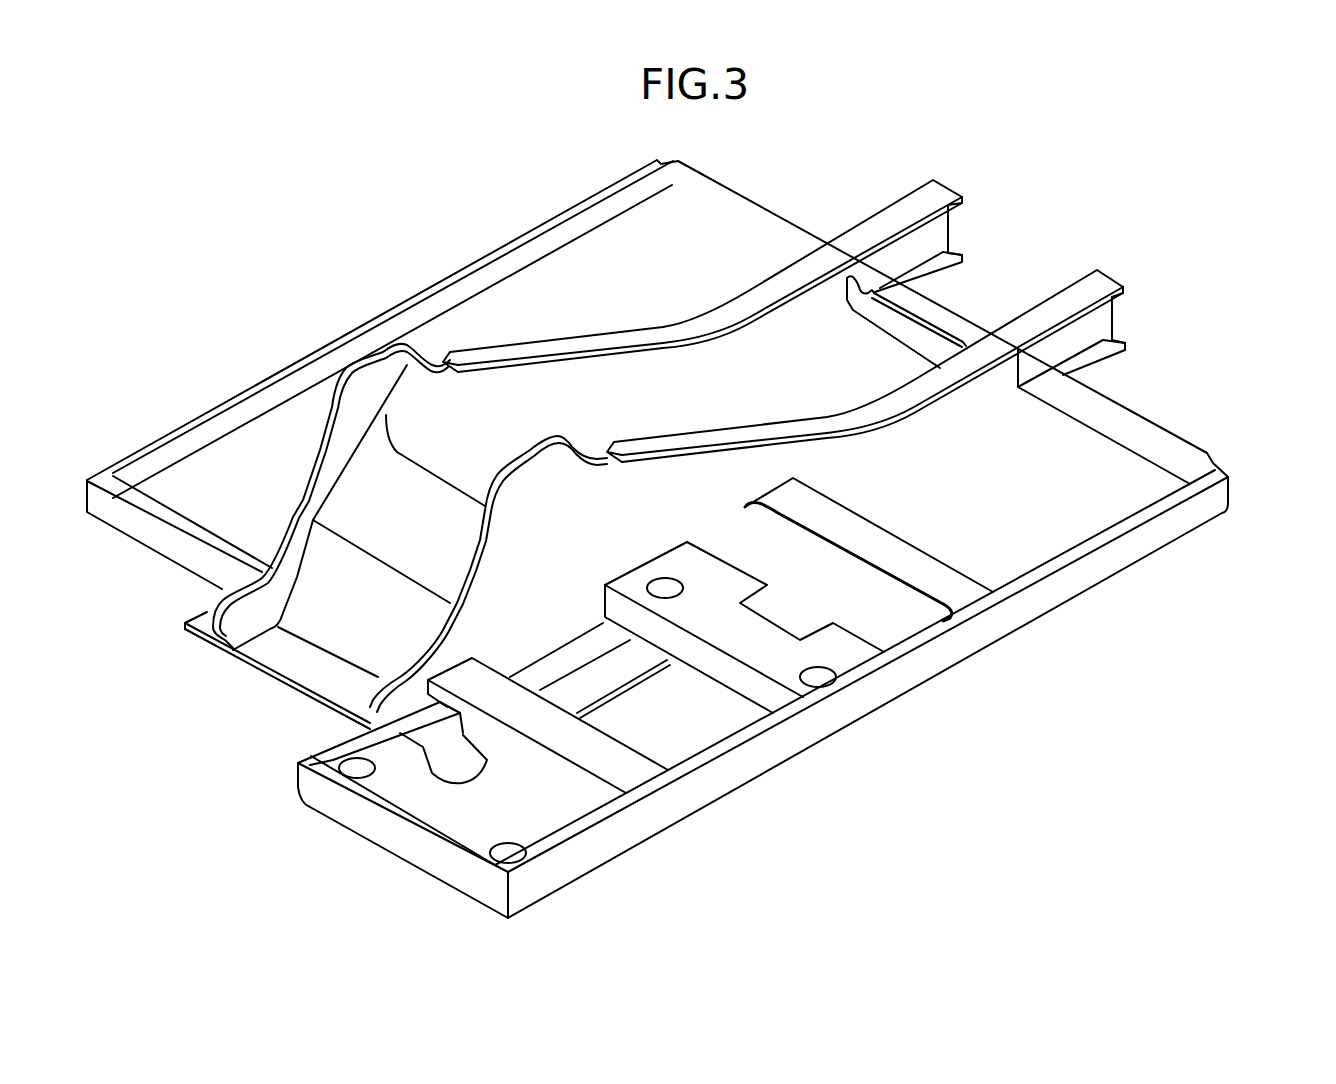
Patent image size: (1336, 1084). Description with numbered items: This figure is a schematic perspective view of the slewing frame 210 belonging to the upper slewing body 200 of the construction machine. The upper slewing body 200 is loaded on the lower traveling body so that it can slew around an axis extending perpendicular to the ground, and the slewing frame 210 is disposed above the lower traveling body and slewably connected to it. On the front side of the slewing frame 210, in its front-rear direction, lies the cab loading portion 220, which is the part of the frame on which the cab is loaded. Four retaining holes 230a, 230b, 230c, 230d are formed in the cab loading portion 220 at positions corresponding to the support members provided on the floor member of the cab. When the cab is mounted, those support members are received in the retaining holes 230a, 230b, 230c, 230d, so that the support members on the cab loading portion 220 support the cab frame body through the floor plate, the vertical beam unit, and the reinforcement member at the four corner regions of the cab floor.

The upper slewing body 200 is at (1200, 407).
The slewing frame 210 is at (1097, 507).
The cab loading portion 220 is at (693, 743).
The retaining hole 230a is at (517, 853).
The retaining hole 230b is at (352, 770).
The retaining hole 230c is at (827, 677).
The retaining hole 230d is at (670, 588).